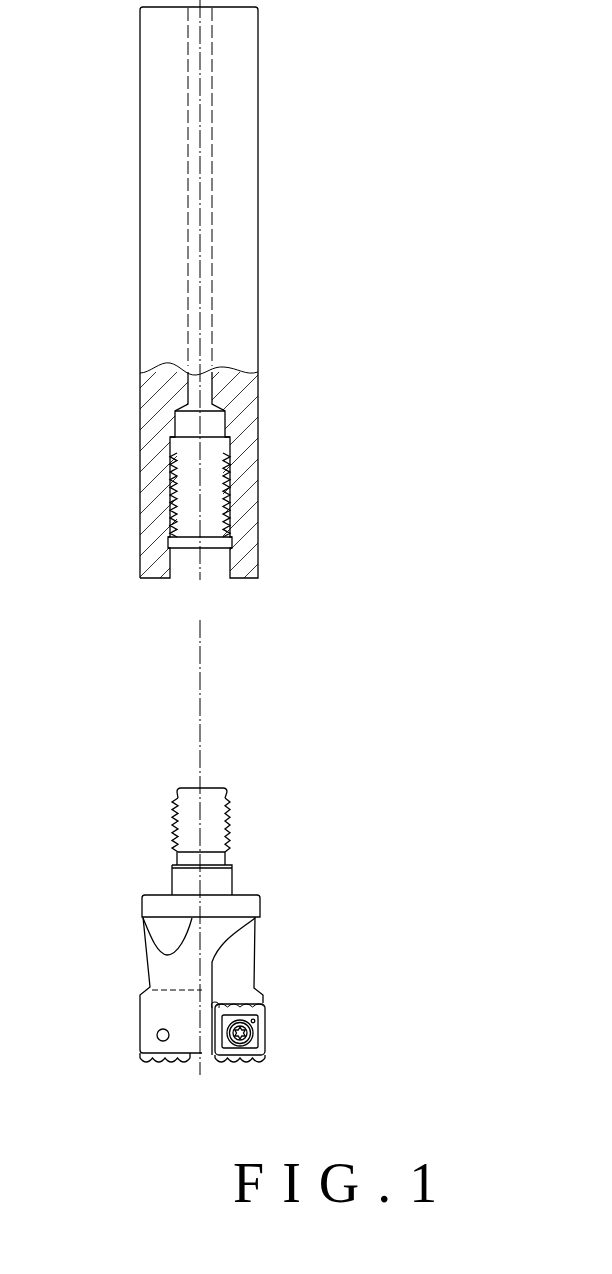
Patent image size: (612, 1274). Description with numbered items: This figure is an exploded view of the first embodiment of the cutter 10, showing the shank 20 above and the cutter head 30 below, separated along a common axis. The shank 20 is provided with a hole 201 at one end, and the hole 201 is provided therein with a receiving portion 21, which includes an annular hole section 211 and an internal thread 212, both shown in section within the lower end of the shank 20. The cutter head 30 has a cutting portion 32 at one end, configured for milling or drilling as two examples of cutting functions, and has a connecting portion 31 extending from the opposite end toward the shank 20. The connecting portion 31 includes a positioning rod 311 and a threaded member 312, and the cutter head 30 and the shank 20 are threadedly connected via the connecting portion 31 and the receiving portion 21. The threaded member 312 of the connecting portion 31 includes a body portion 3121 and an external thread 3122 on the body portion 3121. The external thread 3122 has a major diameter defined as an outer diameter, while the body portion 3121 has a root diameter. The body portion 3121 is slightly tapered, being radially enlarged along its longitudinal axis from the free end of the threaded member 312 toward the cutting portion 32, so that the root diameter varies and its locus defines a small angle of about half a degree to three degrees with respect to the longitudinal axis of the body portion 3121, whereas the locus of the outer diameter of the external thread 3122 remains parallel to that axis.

The cutter 10 is at (383, 582).
The shank 20 is at (246, 295).
The hole 201 is at (208, 448).
The receiving portion 21 is at (349, 466).
The annular hole section 211 is at (228, 565).
The internal thread 212 is at (228, 498).
The cutter head 30 is at (162, 959).
The connecting portion 31 is at (400, 668).
The positioning rod 311 is at (222, 877).
The threaded member 312 is at (340, 722).
The body portion 3121 is at (213, 793).
The external thread 3122 is at (229, 800).
The cutting portion 32 is at (260, 1026).